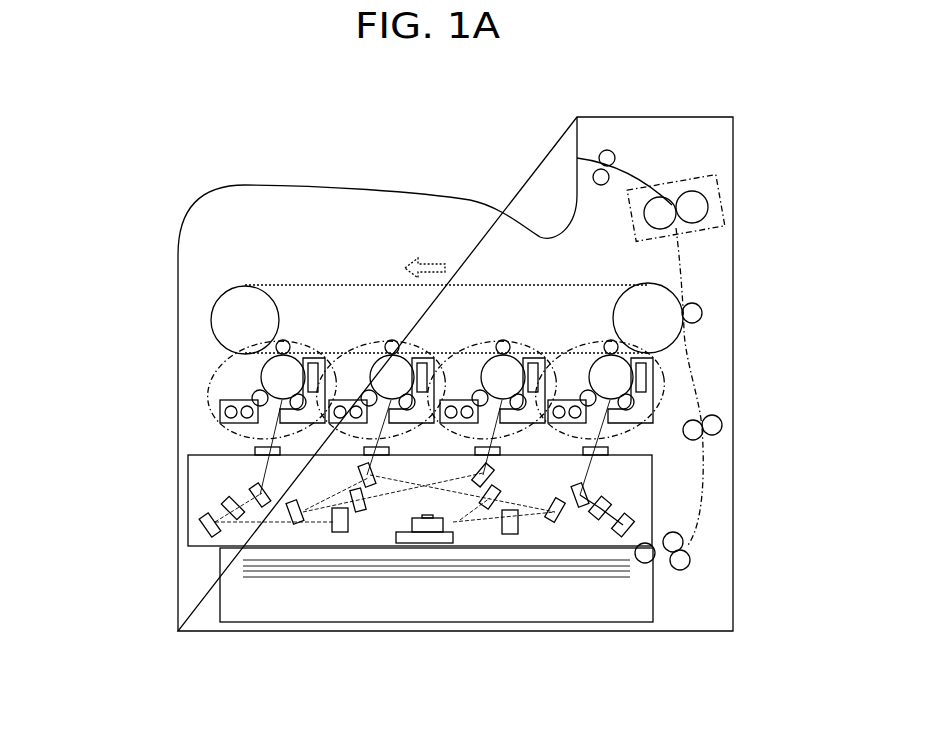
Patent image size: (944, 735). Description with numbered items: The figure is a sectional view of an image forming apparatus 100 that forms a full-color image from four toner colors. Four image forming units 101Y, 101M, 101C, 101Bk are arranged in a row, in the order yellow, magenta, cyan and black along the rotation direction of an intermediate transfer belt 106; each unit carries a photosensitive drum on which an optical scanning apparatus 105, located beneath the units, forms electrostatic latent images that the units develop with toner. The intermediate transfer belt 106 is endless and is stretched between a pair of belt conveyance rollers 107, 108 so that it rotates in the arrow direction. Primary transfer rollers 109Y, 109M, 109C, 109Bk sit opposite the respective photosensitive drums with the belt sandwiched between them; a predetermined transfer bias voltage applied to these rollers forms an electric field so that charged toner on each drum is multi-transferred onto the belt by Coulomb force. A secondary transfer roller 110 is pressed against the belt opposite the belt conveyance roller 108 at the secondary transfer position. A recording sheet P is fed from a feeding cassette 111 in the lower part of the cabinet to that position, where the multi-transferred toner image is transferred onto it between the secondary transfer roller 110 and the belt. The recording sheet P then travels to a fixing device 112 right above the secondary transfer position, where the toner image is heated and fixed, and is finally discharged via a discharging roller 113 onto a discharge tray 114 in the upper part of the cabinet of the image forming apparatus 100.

The image forming apparatus 100 is at (178, 335).
The image forming unit 101Y is at (232, 445).
The image forming unit 101M is at (404, 452).
The image forming unit 101C is at (452, 450).
The image forming unit 101Bk is at (658, 445).
The optical scanning apparatus 105 is at (644, 486).
The intermediate transfer belt 106 is at (383, 285).
The belt conveyance roller 107 is at (235, 313).
The belt conveyance roller 108 is at (663, 302).
The primary transfer roller 109Y is at (283, 340).
The primary transfer roller 109M is at (392, 340).
The primary transfer roller 109C is at (503, 340).
The primary transfer roller 109Bk is at (611, 341).
The secondary transfer roller 110 is at (702, 313).
The feeding cassette 111 is at (653, 595).
The fixing device 112 is at (730, 187).
The discharging roller 113 is at (606, 150).
The discharge tray 114 is at (477, 203).
The recording sheet P is at (562, 580).